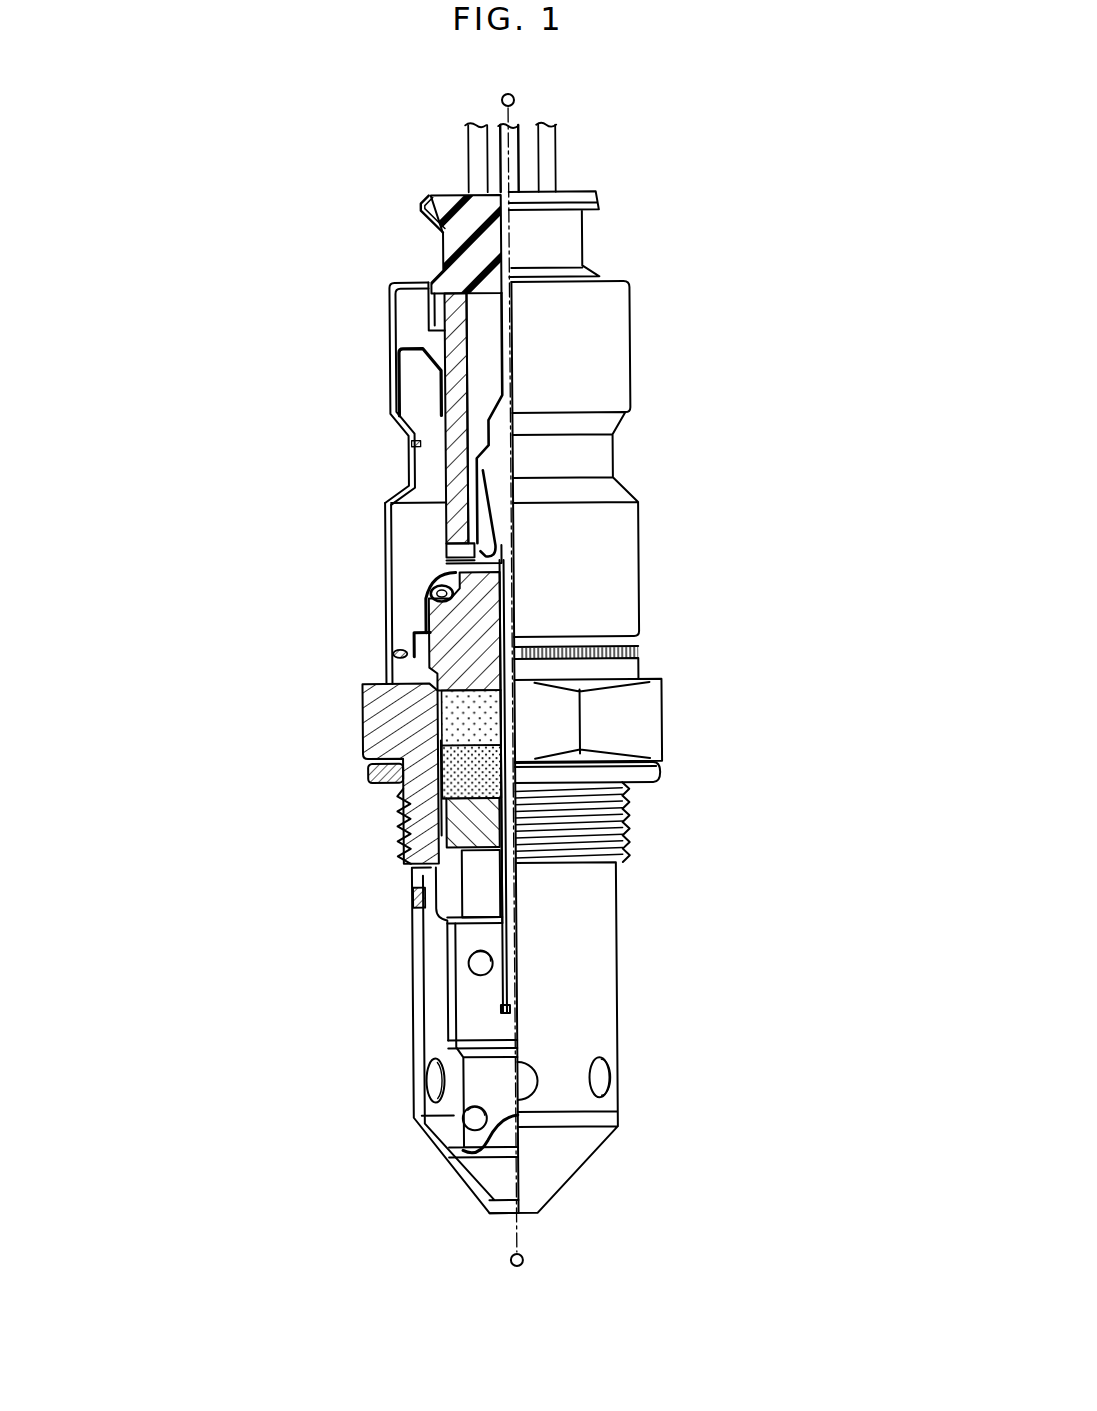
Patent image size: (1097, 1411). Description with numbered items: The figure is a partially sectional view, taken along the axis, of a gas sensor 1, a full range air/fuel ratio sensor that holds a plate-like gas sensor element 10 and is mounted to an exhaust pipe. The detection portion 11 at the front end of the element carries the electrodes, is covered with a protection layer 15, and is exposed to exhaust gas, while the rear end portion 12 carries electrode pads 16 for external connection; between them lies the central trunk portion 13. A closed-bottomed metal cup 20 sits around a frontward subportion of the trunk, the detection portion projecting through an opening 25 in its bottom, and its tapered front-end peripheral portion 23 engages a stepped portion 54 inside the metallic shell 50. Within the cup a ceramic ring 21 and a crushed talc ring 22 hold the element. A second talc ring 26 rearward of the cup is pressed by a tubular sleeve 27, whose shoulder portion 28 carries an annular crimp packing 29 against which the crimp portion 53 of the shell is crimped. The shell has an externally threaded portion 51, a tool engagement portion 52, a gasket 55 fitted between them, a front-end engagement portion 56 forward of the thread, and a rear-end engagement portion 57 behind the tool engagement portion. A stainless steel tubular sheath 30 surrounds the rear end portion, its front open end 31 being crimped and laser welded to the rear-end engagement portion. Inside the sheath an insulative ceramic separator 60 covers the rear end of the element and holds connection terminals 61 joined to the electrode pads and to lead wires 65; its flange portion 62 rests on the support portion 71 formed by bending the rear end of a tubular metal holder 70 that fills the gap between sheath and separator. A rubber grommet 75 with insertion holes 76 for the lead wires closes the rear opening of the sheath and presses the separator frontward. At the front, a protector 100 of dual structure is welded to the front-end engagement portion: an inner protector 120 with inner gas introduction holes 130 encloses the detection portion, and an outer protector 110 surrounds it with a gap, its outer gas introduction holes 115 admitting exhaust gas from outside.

The gas sensor 1 is at (759, 152).
The gas sensor element 10 is at (445, 910).
The detection portion 11 is at (500, 1008).
The rear end portion 12 is at (413, 481).
The central trunk portion 13 is at (376, 746).
The protection layer 15 is at (455, 970).
The electrode pads 16 is at (410, 443).
The metal cup 20 is at (405, 798).
The ceramic ring 21 is at (440, 820).
The talc ring 22 is at (383, 779).
The front-end peripheral portion 23 is at (485, 852).
The opening 25 is at (452, 888).
The talc ring 26 is at (462, 705).
The sleeve 27 is at (443, 540).
The shoulder portion 28 is at (447, 612).
The crimp packing 29 is at (428, 597).
The tubular sheath 30 is at (680, 390).
The front open end 31 is at (386, 668).
The metallic shell 50 is at (692, 688).
The externally threaded portion 51 is at (490, 843).
The tool engagement portion 52 is at (497, 725).
The crimp portion 53 is at (440, 578).
The stepped portion 54 is at (493, 860).
The gasket 55 is at (685, 776).
The front-end engagement portion 56 is at (445, 924).
The rear-end engagement portion 57 is at (398, 647).
The separator 60 is at (432, 453).
The connection terminals 61 is at (447, 517).
The flange portion 62 is at (432, 340).
The lead wires 65 is at (587, 137).
The metal holder 70 is at (410, 341).
The support portion 71 is at (418, 386).
The grommet 75 is at (457, 183).
The insertion holes 76 is at (478, 243).
The protector 100 is at (340, 1175).
The outer protector 110 is at (530, 1170).
The outer gas introduction holes 115 is at (530, 1084).
The inner protector 120 is at (447, 1132).
The inner gas introduction holes 130 is at (455, 988).